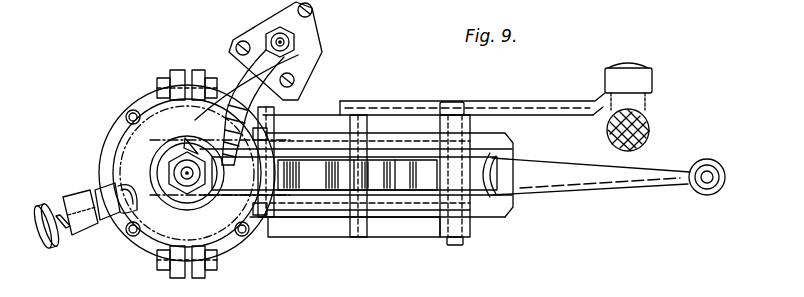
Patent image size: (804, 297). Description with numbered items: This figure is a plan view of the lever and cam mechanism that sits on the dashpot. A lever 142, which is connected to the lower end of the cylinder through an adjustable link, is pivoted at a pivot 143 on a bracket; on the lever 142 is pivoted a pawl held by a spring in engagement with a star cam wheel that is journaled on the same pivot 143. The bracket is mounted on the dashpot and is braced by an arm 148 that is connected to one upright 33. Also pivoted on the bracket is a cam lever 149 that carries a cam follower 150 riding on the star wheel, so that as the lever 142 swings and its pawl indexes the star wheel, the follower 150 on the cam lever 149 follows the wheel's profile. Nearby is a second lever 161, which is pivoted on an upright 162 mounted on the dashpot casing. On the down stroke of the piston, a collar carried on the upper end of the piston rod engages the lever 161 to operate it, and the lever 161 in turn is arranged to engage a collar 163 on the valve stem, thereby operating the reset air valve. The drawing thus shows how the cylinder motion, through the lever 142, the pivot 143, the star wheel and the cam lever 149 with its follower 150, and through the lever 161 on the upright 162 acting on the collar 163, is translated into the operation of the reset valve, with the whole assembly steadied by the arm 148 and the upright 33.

The upright 33 is at (650, 131).
The lever 142 is at (570, 182).
The pivot 143 is at (370, 237).
The arm 148 is at (530, 104).
The cam lever 149 is at (317, 203).
The cam follower 150 is at (370, 182).
The lever 161 is at (185, 142).
The upright 162 is at (232, 92).
The collar 163 is at (292, 40).